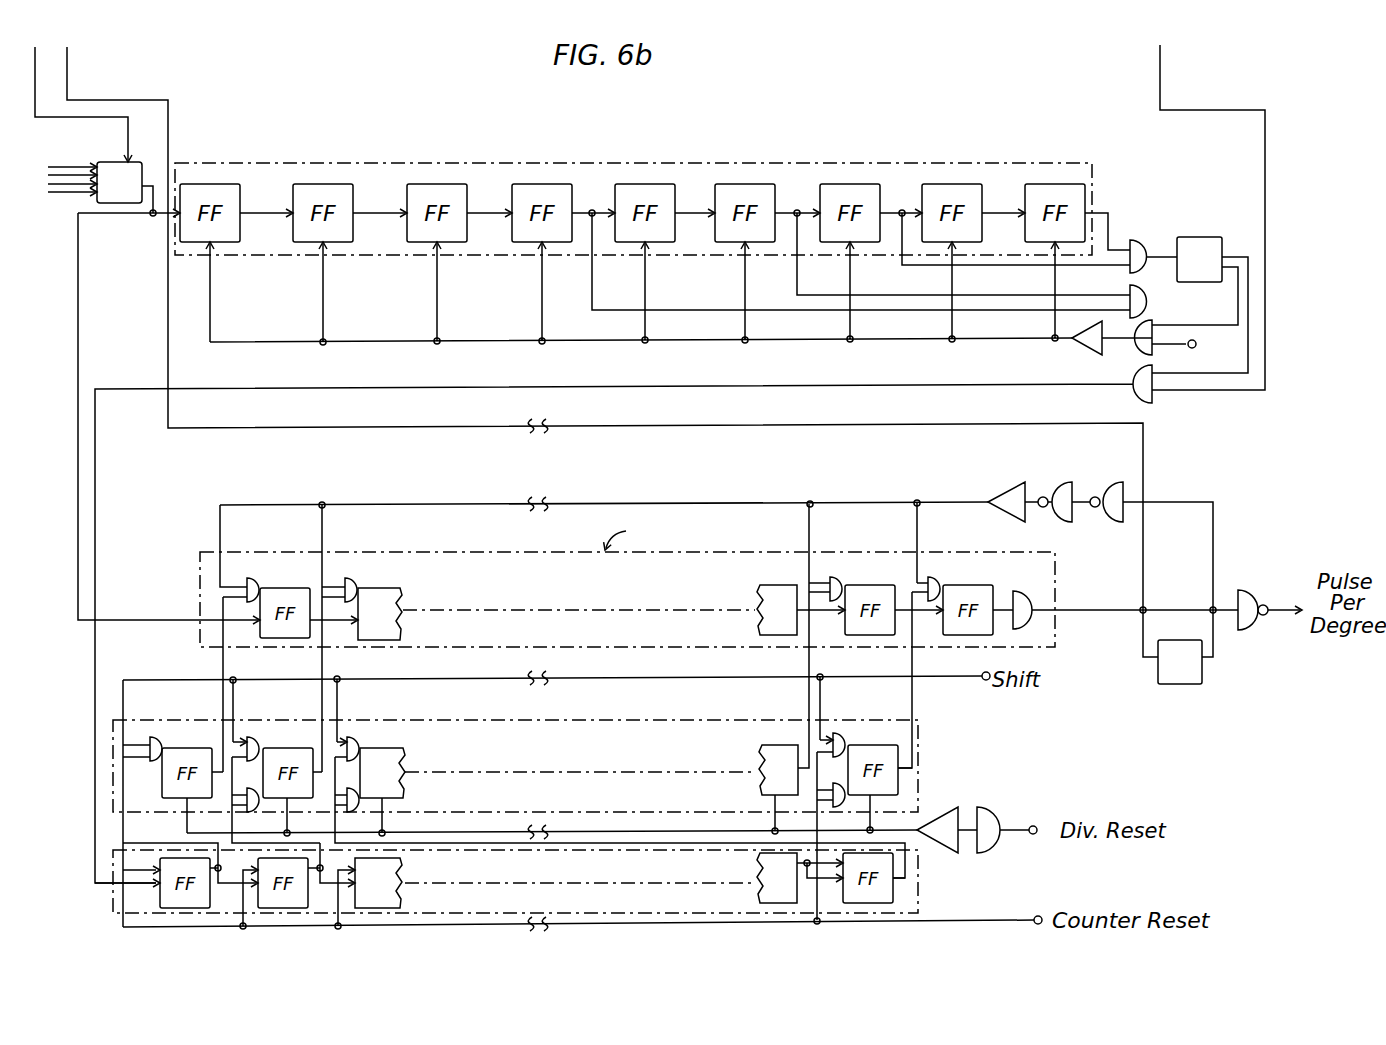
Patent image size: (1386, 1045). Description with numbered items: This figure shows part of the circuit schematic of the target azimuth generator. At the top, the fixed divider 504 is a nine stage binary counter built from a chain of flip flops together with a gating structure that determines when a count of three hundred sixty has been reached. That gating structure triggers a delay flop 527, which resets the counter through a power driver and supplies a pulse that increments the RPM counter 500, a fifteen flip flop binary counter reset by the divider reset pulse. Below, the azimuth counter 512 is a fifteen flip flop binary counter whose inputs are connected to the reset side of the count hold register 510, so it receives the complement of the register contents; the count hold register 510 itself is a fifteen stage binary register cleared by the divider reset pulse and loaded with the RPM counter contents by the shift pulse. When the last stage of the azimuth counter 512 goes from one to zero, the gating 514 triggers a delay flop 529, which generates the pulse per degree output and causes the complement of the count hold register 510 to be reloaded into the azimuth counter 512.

The fixed divider 504 is at (1094, 160).
The delay flop 527 is at (1233, 222).
The azimuth counter 512 is at (873, 536).
The gating circuit 514 is at (1259, 480).
The delay flop 529 is at (1172, 685).
The count hold register 510 is at (738, 716).
The RPM counter 500 is at (853, 920).